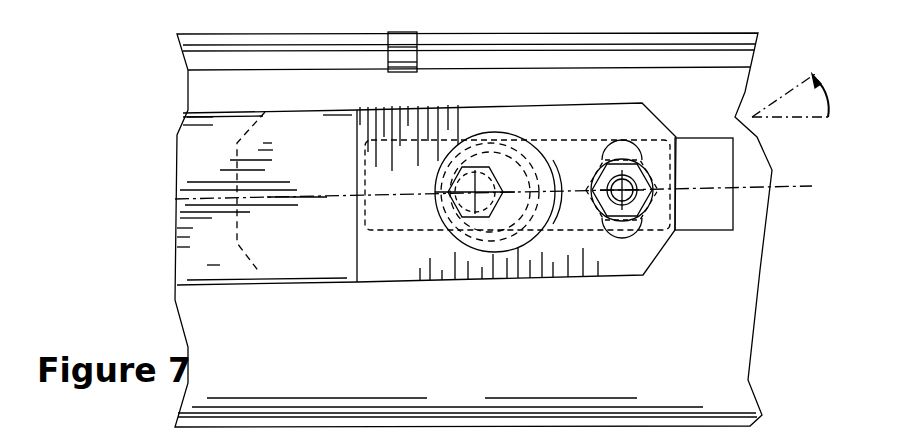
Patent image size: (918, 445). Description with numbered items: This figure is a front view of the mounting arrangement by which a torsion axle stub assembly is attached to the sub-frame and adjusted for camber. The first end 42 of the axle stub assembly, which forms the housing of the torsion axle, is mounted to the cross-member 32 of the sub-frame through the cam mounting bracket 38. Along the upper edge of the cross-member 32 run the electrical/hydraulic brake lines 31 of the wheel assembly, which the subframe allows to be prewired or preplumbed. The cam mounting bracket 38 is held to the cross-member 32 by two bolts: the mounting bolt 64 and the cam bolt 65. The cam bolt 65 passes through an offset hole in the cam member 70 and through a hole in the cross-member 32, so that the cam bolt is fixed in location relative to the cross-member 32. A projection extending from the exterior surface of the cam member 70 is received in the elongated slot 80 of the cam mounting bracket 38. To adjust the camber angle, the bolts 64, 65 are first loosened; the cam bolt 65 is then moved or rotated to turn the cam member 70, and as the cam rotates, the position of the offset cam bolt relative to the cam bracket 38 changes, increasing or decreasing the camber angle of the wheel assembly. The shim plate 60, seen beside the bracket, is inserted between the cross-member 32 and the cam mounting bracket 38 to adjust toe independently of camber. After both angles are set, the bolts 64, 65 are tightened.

The electrical/hydraulic brake lines 31 is at (472, 70).
The cross-member 32 is at (726, 89).
The cam mounting bracket 38 is at (622, 255).
The first end of axle stub assembly 42 is at (223, 257).
The shim plate 60 is at (722, 218).
The mounting bolt 64 is at (630, 197).
The cam bolt 65 is at (480, 198).
The cam member 70 is at (493, 140).
The elongated slot 80 is at (553, 173).